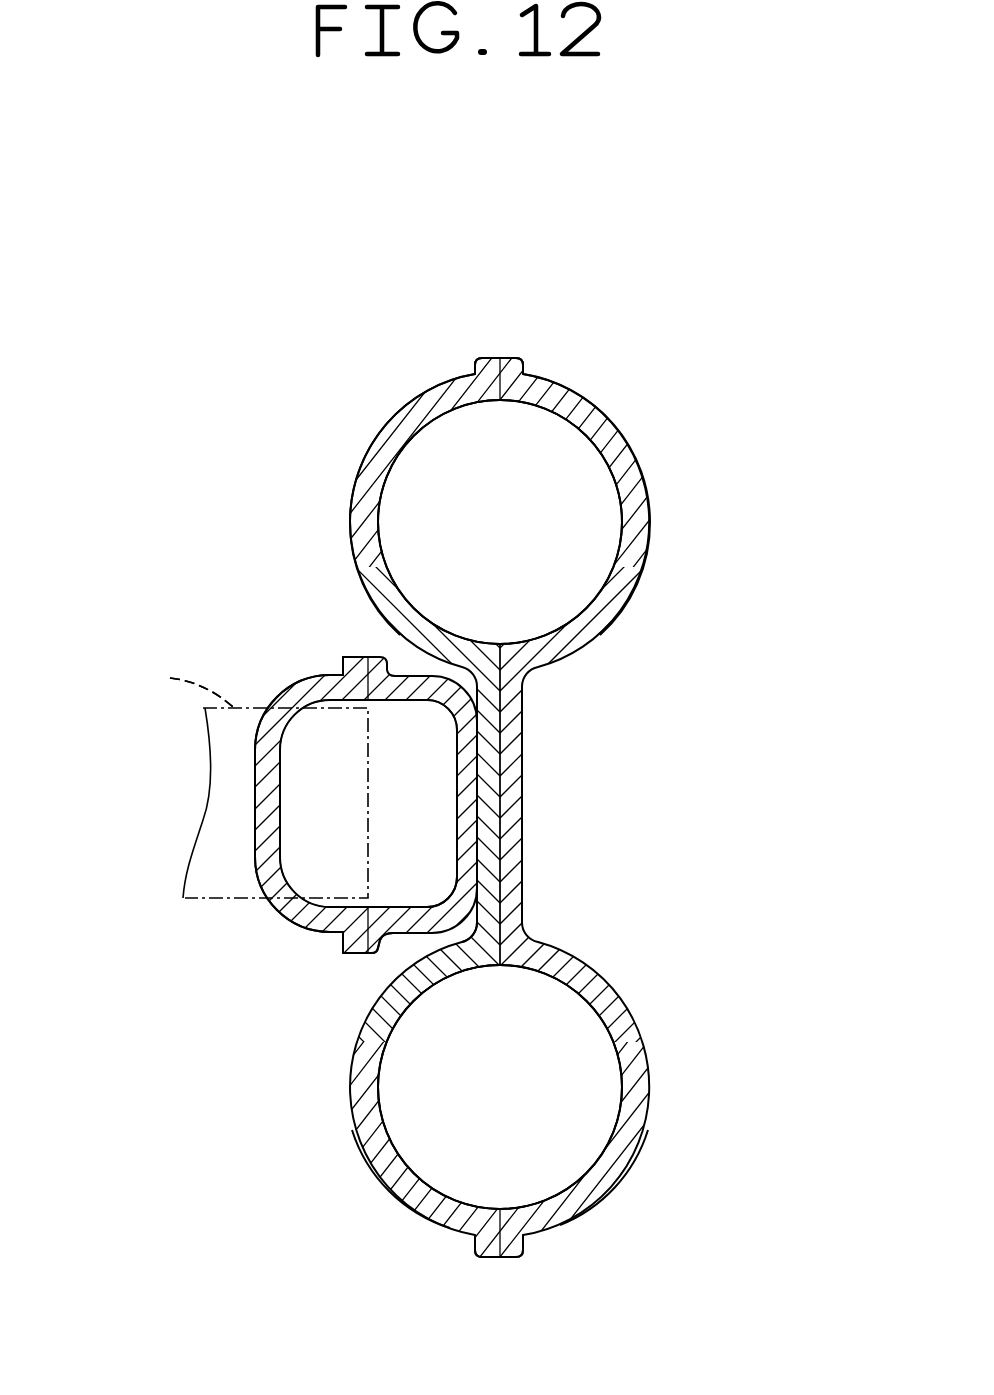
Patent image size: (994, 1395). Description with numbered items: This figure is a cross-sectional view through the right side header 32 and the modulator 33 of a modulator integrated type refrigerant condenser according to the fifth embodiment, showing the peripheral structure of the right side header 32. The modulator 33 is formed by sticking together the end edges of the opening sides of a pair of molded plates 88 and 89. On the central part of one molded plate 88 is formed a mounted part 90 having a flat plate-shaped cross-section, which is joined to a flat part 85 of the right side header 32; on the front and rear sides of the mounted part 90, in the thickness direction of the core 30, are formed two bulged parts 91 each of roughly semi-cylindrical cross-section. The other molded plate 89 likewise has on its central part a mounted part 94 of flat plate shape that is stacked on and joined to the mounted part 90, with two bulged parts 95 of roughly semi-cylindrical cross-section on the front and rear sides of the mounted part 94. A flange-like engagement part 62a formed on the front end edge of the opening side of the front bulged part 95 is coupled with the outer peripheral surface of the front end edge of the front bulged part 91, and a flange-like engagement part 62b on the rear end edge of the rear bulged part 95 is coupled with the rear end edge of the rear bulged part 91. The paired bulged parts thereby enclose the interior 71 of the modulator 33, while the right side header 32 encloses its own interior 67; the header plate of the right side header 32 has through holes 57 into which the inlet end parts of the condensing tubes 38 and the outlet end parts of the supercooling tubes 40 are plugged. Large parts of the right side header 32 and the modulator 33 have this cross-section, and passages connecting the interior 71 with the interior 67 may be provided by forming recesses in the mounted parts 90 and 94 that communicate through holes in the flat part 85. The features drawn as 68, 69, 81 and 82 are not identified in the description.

The flange-like engagement part 62a is at (493, 363).
The flange-like engagement part 62b is at (494, 1250).
The molded plate 88 is at (370, 446).
The molded plate 89 is at (571, 394).
The modulator 33 is at (642, 470).
The bulged part 91 is at (357, 502).
The interior of the modulator 71 is at (486, 550).
The bulged part 95 is at (633, 577).
The core 30 is at (255, 705).
The condensing tube 38 is at (158, 661).
The supercooling tube 40 is at (186, 661).
The mounted part 94 is at (512, 697).
The side chamber wall 68 is at (430, 752).
The side chamber wall 69 is at (605, 804).
The interior of the right side header 67 is at (394, 828).
The through holes 57 is at (257, 818).
The mounted part 90 is at (487, 803).
The flat part 85 is at (463, 853).
The connecting portion 82 is at (480, 917).
The right side header 32 is at (286, 917).
The lower rib 81 is at (327, 935).